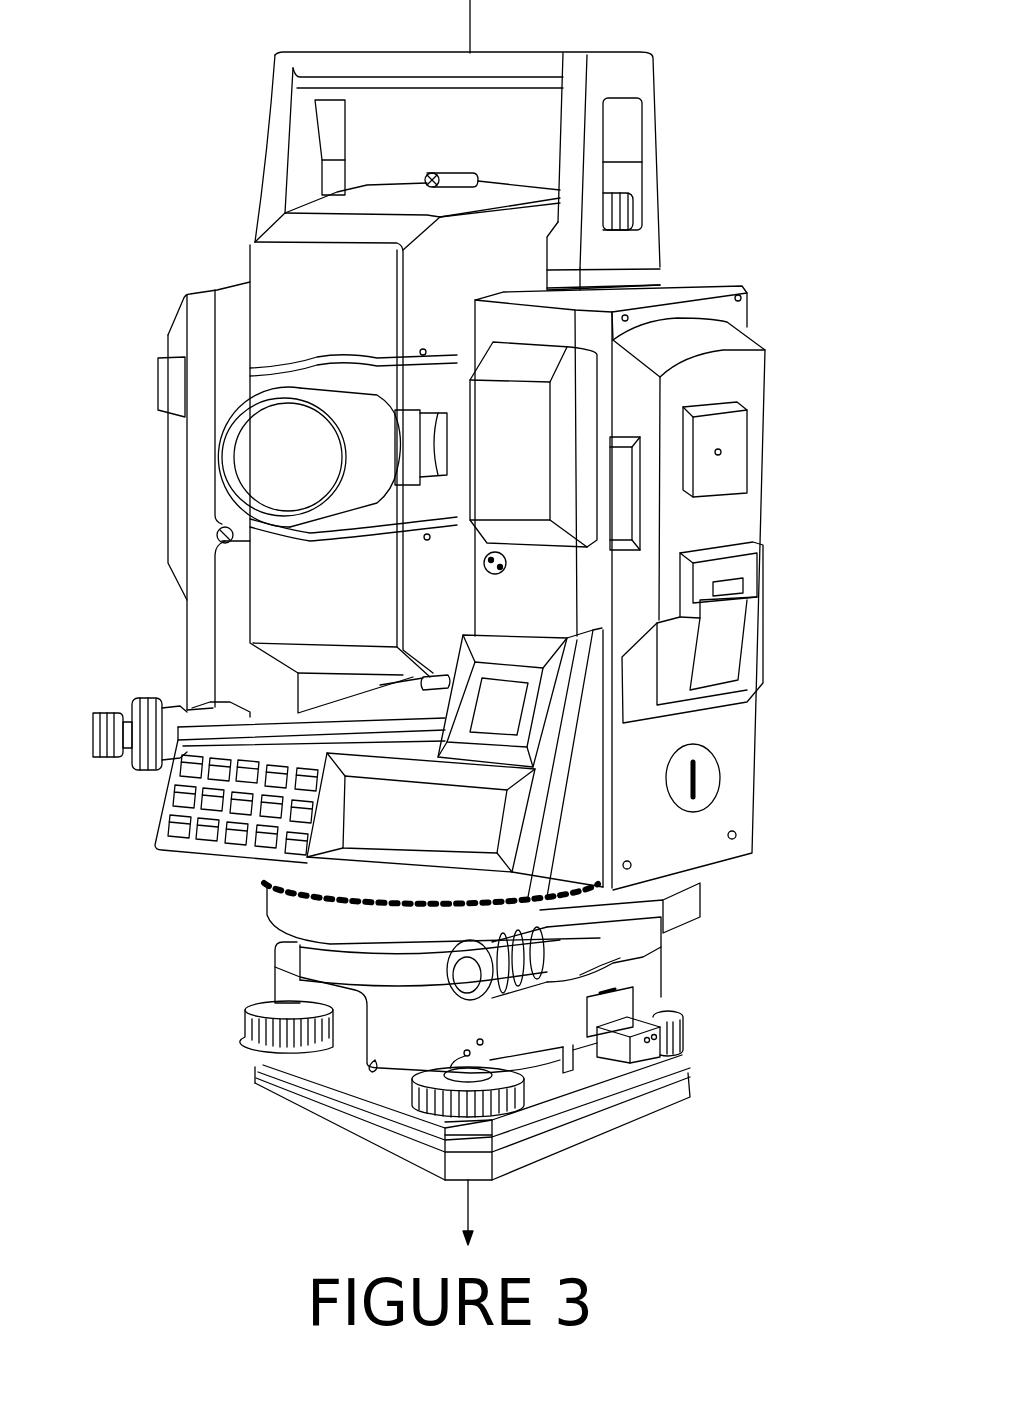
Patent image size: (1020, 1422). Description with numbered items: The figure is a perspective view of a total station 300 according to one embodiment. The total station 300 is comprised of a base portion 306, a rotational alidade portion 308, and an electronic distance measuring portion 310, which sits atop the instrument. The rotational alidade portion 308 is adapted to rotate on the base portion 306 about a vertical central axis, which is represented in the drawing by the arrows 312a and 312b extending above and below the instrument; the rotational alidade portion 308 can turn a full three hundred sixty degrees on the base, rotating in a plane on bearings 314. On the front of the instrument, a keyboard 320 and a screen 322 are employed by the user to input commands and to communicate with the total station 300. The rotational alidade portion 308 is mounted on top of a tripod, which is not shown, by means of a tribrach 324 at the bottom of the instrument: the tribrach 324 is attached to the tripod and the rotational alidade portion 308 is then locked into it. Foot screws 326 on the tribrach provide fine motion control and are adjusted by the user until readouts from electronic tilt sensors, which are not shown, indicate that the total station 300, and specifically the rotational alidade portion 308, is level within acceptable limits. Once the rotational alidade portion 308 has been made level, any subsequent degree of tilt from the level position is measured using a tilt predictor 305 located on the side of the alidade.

The total station 300 is at (797, 364).
The tilt predictor 305 is at (730, 472).
The base portion 306 is at (710, 873).
The rotational alidade portion 308 is at (747, 512).
The electronic distance measuring portion 310 is at (278, 272).
The arrow representing vertical central axis 312a is at (470, 32).
The arrow representing vertical central axis 312b is at (470, 1197).
The bearings 314 is at (268, 880).
The keyboard 320 is at (168, 787).
The screen 322 is at (437, 830).
The tribrach 324 is at (357, 1150).
The foot screws 326 is at (243, 1042).